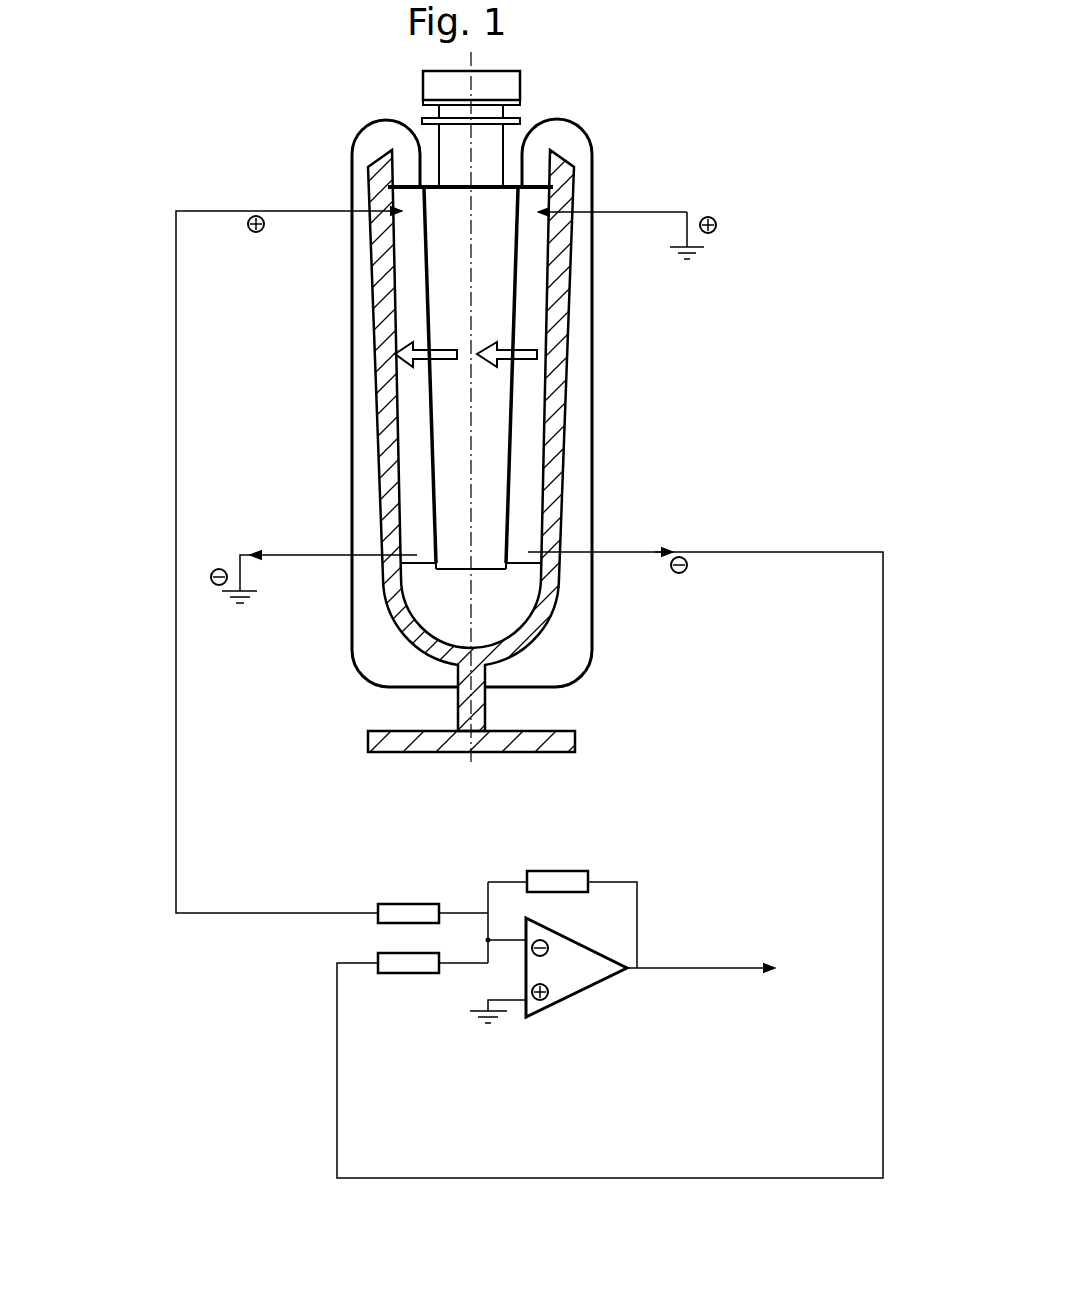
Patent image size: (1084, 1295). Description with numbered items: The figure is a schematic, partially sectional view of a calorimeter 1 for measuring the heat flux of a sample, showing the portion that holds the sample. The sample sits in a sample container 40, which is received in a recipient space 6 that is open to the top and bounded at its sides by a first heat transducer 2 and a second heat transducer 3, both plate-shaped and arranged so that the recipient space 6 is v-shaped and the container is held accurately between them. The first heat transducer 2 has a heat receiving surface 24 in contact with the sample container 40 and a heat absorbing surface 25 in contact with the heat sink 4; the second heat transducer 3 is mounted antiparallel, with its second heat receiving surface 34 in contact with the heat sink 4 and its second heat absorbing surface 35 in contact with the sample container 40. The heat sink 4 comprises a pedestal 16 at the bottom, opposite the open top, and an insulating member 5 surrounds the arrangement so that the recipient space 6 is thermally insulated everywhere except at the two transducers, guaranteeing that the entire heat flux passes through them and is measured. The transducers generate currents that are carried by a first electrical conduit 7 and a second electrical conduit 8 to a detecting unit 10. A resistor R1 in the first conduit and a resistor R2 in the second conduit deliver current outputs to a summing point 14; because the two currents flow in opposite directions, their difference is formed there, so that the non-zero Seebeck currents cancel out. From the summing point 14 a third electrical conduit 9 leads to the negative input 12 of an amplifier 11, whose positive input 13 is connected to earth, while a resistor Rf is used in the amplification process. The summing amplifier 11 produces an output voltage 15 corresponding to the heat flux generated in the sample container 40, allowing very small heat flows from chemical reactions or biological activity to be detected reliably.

The calorimeter 1 is at (195, 127).
The first heat transducer 2 is at (336, 379).
The second heat transducer 3 is at (598, 379).
The heat sink 4 is at (403, 622).
The insulating member 5 is at (580, 629).
The recipient space 6 is at (523, 212).
The first electrical conduit 7 is at (176, 567).
The second electrical conduit 8 is at (883, 703).
The third electrical conduit 9 is at (512, 940).
The detecting unit 10 is at (555, 1029).
The amplifier 11 is at (587, 958).
The negative input 12 is at (539, 957).
The positive input 13 is at (538, 1002).
The summing point 14 is at (488, 942).
The output voltage 15 is at (720, 968).
The pedestal 16 is at (368, 742).
The heat receiving surface 24 is at (422, 383).
The heat absorbing surface 25 is at (398, 451).
The second heat receiving surface 34 is at (550, 338).
The second heat absorbing surface 35 is at (518, 378).
The sample container 40 is at (490, 443).
The resistor R1 is at (407, 912).
The resistor R2 is at (409, 962).
The resistor Rf is at (563, 881).